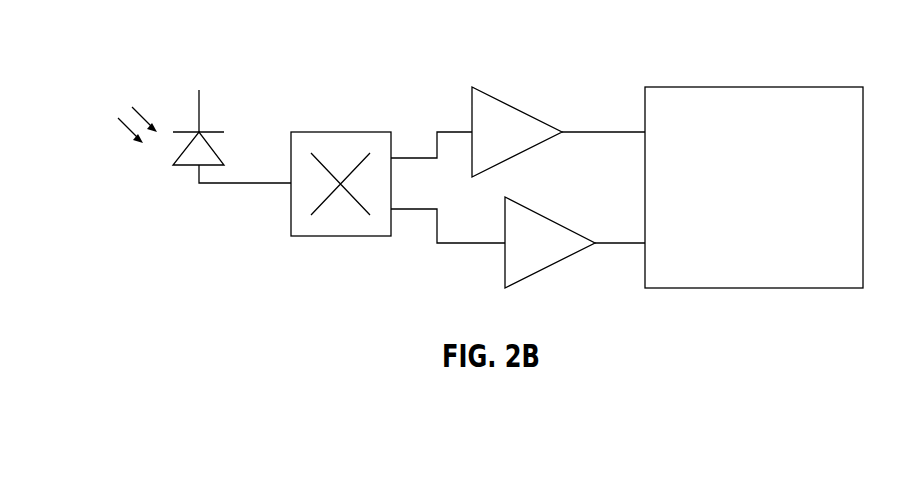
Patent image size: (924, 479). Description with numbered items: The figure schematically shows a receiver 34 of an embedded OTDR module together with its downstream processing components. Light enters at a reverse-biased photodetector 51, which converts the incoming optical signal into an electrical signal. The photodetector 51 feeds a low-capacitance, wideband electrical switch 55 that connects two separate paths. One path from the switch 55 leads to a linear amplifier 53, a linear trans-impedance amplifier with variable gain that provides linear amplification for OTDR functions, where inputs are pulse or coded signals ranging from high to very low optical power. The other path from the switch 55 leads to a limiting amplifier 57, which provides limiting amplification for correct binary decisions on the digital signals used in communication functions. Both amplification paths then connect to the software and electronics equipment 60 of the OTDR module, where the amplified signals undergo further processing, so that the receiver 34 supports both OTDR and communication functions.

The receiver 34 is at (257, 272).
The reverse-biased photodetector 51 is at (214, 106).
The linear amplifier 53 is at (518, 106).
The wideband electrical switch 55 is at (343, 130).
The limiting amplifier 57 is at (551, 216).
The software and electronics equipment 60 is at (712, 87).